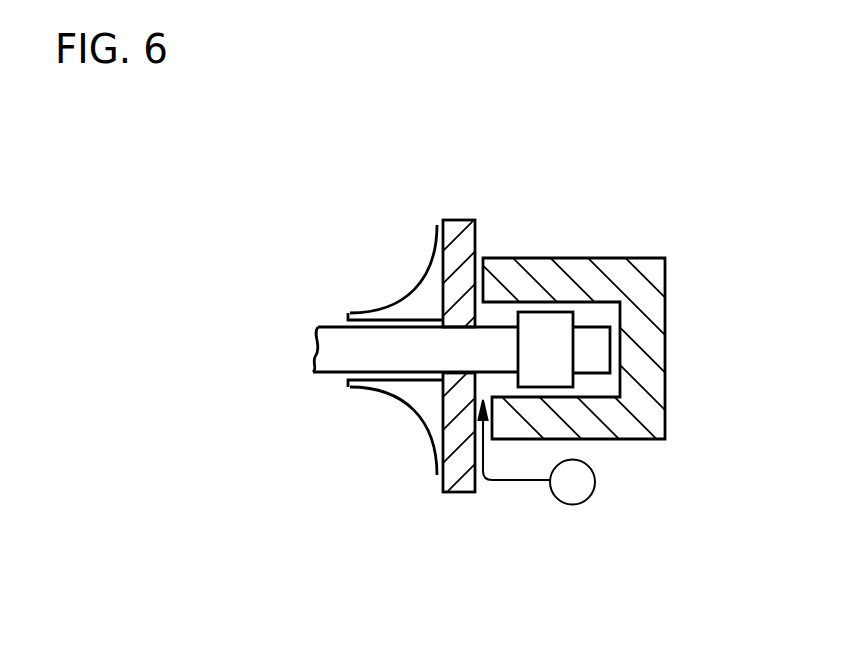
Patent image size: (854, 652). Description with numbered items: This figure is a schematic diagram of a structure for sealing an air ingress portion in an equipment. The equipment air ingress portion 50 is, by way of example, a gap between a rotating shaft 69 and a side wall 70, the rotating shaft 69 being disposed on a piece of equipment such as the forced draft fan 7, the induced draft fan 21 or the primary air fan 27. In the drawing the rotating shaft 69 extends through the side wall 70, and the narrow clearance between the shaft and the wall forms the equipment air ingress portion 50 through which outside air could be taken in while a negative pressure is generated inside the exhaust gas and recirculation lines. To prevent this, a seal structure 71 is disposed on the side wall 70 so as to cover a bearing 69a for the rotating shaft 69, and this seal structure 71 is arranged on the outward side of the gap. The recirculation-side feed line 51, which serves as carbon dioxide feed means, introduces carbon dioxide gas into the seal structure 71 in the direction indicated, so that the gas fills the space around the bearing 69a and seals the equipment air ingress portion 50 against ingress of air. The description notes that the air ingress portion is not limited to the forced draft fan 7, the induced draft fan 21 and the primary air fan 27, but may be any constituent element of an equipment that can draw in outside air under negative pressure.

The forced draft fan 7 is at (604, 274).
The induced draft fan 21 is at (604, 274).
The primary air fan 27 is at (604, 274).
The equipment air ingress portion 50 is at (474, 397).
The recirculation-side feed line 51 is at (527, 483).
The rotating shaft 69 is at (340, 353).
The bearing 69a is at (560, 327).
The side wall 70 is at (469, 484).
The seal structure 71 is at (646, 420).